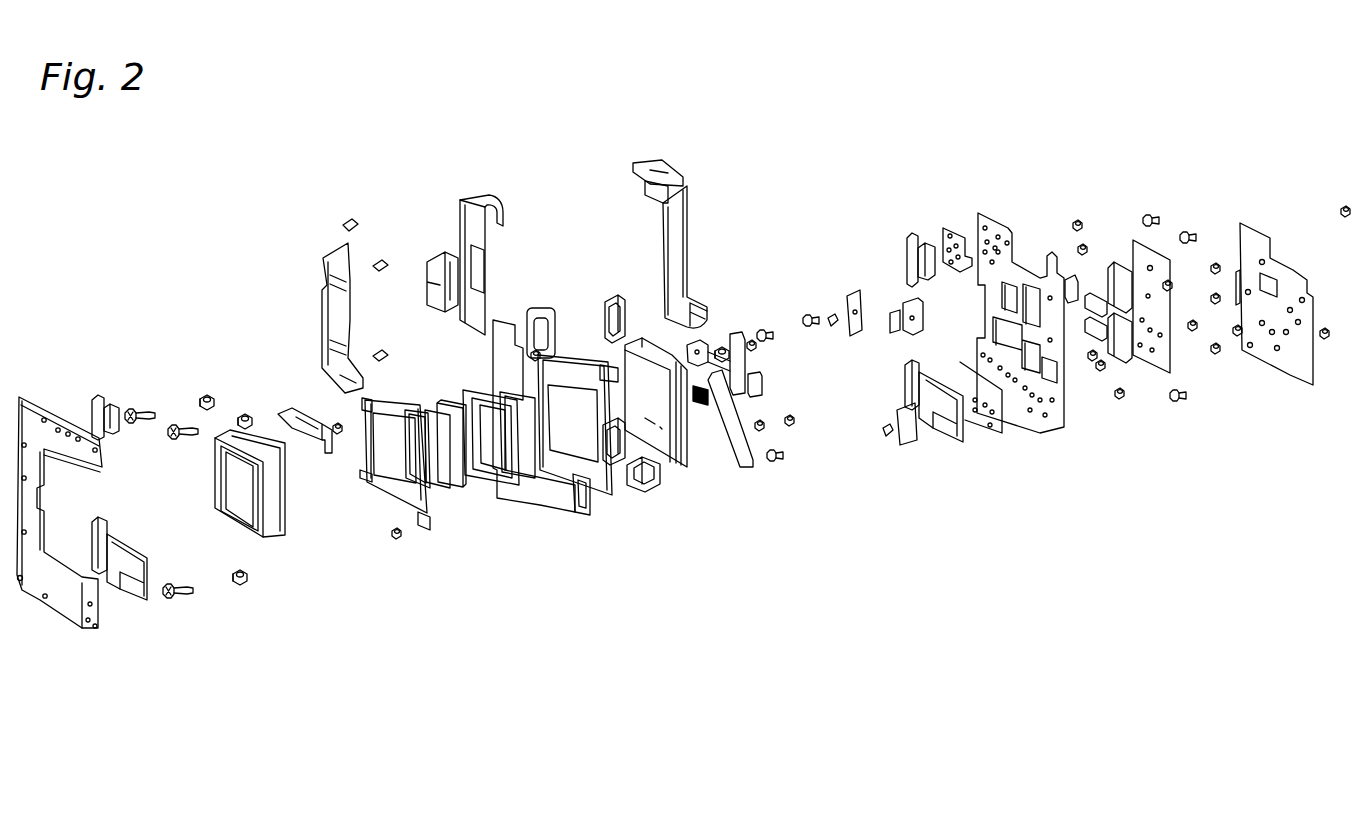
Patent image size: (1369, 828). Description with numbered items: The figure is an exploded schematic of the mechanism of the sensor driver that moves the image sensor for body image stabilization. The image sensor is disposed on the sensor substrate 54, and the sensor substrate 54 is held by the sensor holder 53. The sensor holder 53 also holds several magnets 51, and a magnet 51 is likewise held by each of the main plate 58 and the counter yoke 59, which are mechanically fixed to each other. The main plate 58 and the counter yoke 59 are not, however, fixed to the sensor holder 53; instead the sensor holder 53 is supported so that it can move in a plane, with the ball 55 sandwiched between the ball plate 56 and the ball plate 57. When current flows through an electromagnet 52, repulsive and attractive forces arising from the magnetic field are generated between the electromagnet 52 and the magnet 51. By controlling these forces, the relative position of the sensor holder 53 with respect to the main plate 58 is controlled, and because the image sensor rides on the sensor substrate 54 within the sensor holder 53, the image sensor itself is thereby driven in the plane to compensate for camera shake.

The magnet 51 is at (92, 416).
The electromagnet 52 is at (603, 287).
The sensor holder 53 is at (587, 516).
The sensor substrate 54 is at (689, 471).
The ball 55 is at (906, 313).
The ball plate 56 is at (836, 336).
The ball plate 57 is at (892, 336).
The main plate 58 is at (1056, 438).
The counter yoke 59 is at (98, 636).